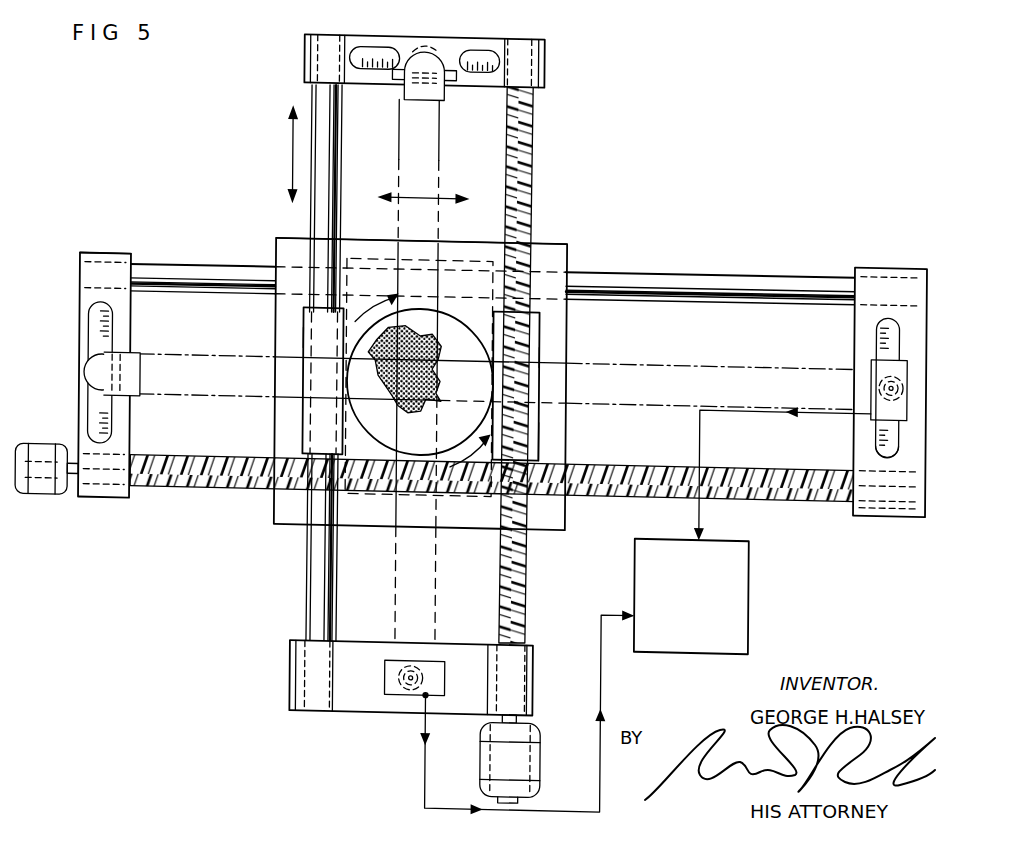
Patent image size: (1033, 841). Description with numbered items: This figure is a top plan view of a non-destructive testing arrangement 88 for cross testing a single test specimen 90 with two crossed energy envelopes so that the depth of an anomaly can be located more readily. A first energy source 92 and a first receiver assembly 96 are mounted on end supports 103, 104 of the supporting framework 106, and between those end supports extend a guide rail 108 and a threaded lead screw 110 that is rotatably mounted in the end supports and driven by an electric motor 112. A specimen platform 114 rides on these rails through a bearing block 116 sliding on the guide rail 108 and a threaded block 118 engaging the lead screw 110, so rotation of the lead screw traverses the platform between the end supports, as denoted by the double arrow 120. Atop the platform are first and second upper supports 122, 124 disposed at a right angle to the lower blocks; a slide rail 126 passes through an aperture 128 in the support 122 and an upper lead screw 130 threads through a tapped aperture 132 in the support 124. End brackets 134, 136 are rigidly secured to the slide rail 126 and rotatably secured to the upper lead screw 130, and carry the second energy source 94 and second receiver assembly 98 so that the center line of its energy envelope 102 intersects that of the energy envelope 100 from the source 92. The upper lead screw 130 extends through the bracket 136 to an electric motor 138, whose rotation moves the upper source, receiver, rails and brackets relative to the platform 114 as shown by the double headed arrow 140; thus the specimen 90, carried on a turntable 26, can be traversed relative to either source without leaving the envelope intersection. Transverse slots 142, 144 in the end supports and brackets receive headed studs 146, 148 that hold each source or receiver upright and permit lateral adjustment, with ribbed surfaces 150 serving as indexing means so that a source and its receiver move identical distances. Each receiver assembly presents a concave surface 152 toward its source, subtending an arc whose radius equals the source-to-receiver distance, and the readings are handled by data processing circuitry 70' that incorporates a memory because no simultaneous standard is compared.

The turntable 26 is at (363, 425).
The data processing circuitry 70' is at (645, 611).
The non-destructive testing arrangement 88 is at (580, 218).
The test object 90 is at (420, 352).
The energy source 92 is at (131, 357).
The energy source 94 is at (440, 62).
The receiver assembly 96 is at (873, 358).
The receiver assembly 98 is at (387, 662).
The energy envelope 100 is at (663, 370).
The energy envelope 102 is at (410, 158).
The end support 103 is at (121, 432).
The end support 104 is at (858, 452).
The supporting framework 106 is at (203, 232).
The guide rail 108 is at (187, 270).
The lead screw 110 is at (200, 458).
The electric motor 112 is at (50, 492).
The specimen platform 114 is at (564, 338).
The bearing block 116 is at (457, 242).
The threaded block 118 is at (388, 500).
The double arrow 120 is at (430, 197).
The first upper support 122 is at (300, 325).
The second upper support 124 is at (540, 440).
The slide rail 126 is at (305, 590).
The aperture 128 is at (305, 340).
The lead screw 130 is at (532, 168).
The tapped aperture 132 is at (566, 353).
The end bracket 134 is at (418, 37).
The end bracket 136 is at (537, 668).
The electric motor 138 is at (523, 760).
The double headed arrow 140 is at (292, 160).
The transverse slot 142 is at (95, 318).
The transverse slot 144 is at (492, 58).
The headed stud 146 is at (432, 46).
The headed stud 148 is at (890, 372).
The ribbed surfaces 150 is at (887, 452).
The concave surface 152 is at (872, 365).